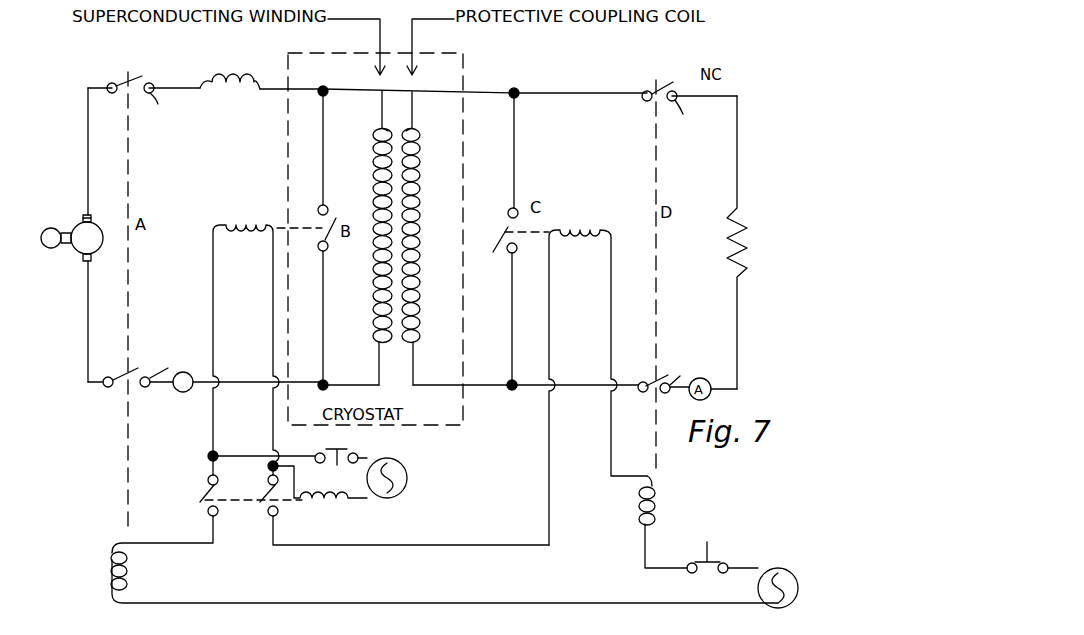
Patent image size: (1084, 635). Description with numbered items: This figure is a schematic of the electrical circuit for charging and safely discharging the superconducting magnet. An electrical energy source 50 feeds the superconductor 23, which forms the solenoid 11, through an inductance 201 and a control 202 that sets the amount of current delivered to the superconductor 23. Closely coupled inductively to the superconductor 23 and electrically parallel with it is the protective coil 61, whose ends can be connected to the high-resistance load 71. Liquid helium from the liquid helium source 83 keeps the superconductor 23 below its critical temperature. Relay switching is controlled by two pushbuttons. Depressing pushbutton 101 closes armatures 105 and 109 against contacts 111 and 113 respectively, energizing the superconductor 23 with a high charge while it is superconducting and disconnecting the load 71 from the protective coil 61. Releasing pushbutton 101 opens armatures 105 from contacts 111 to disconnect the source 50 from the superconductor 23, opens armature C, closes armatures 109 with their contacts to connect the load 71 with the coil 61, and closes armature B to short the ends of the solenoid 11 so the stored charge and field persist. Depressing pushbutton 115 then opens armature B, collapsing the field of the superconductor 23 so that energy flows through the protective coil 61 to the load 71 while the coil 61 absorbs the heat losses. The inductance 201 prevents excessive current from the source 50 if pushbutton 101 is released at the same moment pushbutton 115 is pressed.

The solenoid 11 is at (367, 187).
The superconductor 23 is at (375, 143).
The electrical energy source 50 is at (56, 248).
The protective coil 61 is at (416, 143).
The load 71 is at (745, 233).
The liquid helium source 83 is at (189, 393).
The pushbutton 101 is at (715, 555).
The armature 105 is at (137, 78).
The armature 109 is at (648, 82).
The contact 111 is at (177, 235).
The contact 113 is at (692, 242).
The pushbutton 115 is at (343, 445).
The inductance 201 is at (257, 86).
The control 202 is at (78, 216).